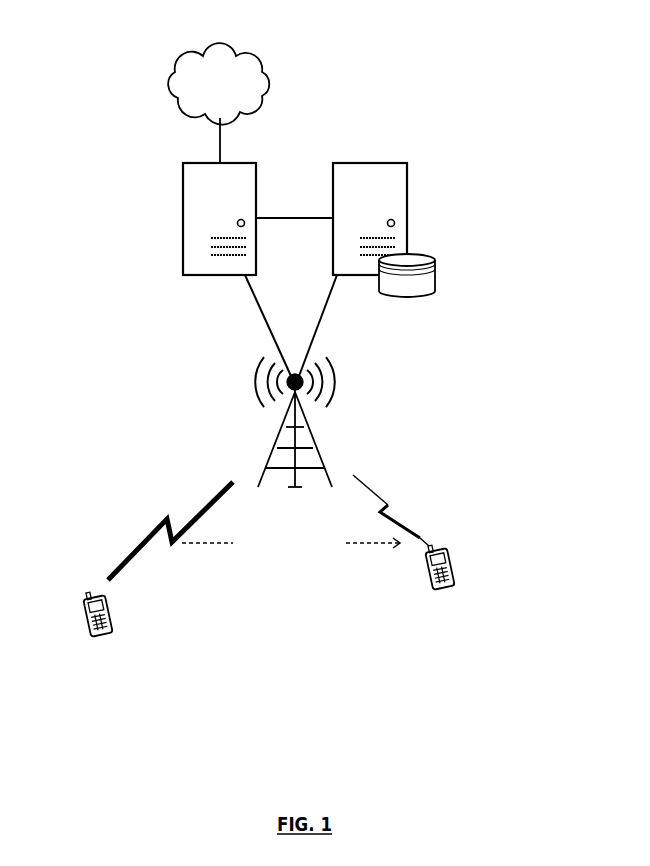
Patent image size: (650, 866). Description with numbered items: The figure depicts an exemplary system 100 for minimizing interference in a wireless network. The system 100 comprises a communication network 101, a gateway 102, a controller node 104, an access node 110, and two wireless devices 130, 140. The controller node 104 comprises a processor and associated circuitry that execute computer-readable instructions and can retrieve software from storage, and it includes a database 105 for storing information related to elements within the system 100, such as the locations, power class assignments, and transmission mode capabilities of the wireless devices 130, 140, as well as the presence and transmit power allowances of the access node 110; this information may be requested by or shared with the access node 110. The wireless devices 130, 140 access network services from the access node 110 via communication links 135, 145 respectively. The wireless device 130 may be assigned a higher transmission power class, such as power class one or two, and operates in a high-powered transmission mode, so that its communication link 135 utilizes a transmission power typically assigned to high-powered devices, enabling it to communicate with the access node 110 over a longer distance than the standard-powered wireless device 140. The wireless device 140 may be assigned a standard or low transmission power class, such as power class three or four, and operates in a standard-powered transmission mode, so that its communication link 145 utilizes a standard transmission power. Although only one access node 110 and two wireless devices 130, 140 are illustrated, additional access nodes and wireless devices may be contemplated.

The system 100 is at (349, 62).
The communication network 101 is at (237, 92).
The gateway 102 is at (183, 192).
The controller node 104 is at (407, 205).
The database 105 is at (436, 280).
The access node 110 is at (276, 458).
The wireless device 130 is at (88, 596).
The communication link 135 is at (161, 521).
The wireless device 140 is at (452, 558).
The communication link 145 is at (397, 506).